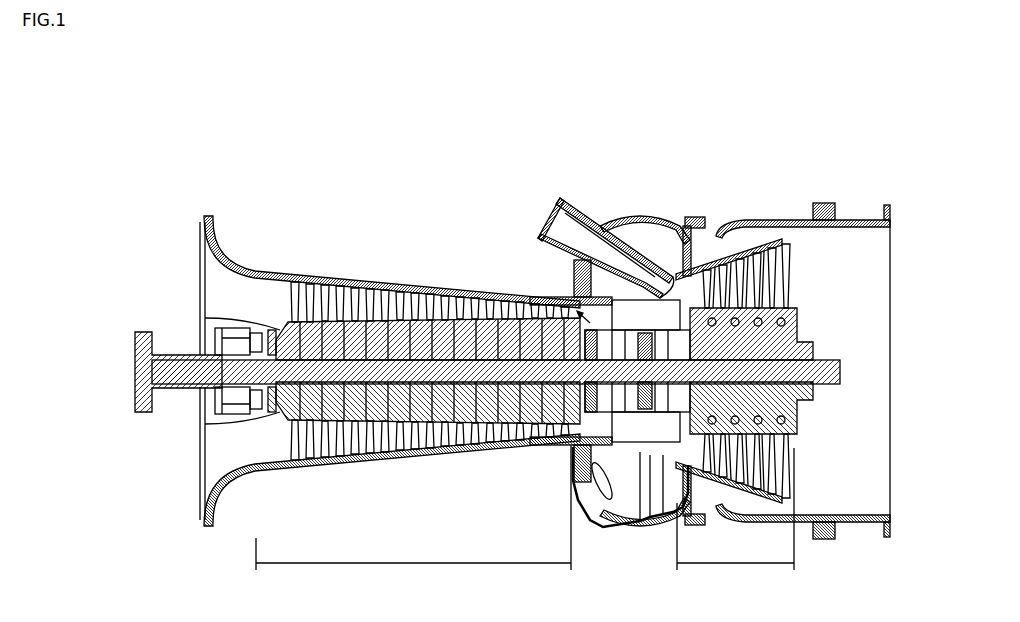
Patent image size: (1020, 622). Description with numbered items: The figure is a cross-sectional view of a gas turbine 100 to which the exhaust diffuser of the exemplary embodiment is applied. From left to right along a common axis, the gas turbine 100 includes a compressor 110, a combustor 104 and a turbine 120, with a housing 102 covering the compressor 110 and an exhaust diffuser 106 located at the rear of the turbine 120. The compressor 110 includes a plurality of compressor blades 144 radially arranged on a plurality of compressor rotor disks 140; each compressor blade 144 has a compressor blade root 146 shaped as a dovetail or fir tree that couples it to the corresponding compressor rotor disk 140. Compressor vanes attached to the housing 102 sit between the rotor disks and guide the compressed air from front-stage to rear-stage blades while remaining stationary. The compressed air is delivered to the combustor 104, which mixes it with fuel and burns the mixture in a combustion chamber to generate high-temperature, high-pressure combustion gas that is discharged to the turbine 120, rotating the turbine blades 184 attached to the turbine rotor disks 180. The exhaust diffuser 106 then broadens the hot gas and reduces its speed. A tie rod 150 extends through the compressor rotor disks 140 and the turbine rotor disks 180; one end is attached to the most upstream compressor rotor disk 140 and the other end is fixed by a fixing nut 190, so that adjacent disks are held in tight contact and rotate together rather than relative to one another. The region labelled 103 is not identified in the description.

The gas turbine 100 is at (854, 62).
The housing 102 is at (427, 269).
The diffuser 103 is at (524, 223).
The combustor 104 is at (565, 192).
The exhaust diffuser 106 is at (855, 199).
The compressor 110 is at (413, 507).
The turbine 120 is at (735, 509).
The compressor rotor disk 140 is at (333, 290).
The compressor blade 144 is at (340, 290).
The compressor blade root 146 is at (356, 292).
The tie rod 150 is at (199, 425).
The turbine rotor disk 180 is at (750, 292).
The turbine blade 184 is at (778, 222).
The fixing nut 190 is at (832, 351).